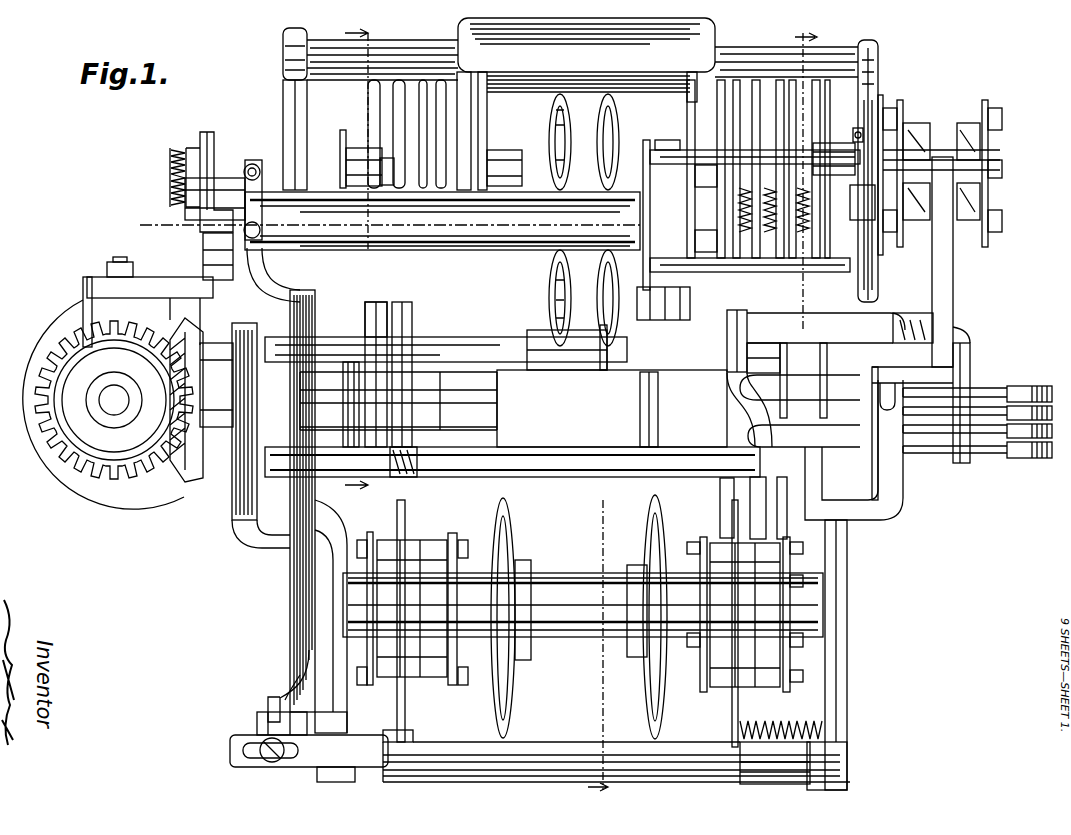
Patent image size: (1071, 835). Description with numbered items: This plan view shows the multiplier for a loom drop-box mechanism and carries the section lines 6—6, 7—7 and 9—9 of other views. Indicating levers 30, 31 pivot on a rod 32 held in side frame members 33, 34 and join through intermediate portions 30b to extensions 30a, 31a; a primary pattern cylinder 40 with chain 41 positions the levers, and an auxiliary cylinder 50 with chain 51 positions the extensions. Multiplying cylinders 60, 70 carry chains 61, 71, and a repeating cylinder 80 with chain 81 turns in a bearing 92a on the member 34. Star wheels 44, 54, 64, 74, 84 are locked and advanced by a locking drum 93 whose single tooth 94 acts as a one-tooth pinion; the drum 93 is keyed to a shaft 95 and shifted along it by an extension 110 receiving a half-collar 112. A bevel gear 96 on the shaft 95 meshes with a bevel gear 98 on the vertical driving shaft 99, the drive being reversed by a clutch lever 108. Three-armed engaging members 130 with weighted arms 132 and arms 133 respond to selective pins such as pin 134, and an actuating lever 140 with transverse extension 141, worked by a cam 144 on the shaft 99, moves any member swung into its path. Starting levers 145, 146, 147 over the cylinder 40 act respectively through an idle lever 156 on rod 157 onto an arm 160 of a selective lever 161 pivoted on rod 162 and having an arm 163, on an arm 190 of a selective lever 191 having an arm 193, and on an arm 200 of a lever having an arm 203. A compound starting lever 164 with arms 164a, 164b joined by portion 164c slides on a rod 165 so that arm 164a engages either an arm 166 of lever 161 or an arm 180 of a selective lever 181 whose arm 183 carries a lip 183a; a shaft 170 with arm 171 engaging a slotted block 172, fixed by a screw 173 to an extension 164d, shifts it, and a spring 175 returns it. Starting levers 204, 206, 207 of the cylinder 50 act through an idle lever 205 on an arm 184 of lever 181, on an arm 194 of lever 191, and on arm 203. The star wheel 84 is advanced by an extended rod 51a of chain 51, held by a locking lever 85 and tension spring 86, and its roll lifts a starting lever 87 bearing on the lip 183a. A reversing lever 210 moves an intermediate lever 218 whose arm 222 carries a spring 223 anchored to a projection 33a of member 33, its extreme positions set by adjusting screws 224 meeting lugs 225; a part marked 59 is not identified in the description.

The line 6— 6 is at (697, 416).
The line 7— 7 is at (356, 258).
The line 9— 9 is at (383, 220).
The indicating lever 30 is at (466, 122).
The extension 30a is at (717, 106).
The intermediate portion 30b is at (658, 55).
The indicating lever 31 is at (486, 122).
The extension 31a is at (687, 120).
The rod 32 is at (283, 52).
The side frame member 33 is at (283, 102).
The projection 33a is at (203, 226).
The side frame member 34 is at (883, 102).
The primary pattern cylinder 40 is at (346, 168).
The pattern chain 41 is at (340, 136).
The star wheel 44 is at (557, 324).
The auxiliary pattern cylinder 50 is at (678, 150).
The pattern chain 51 is at (823, 286).
The rod 51a is at (848, 215).
The star wheel 54 is at (616, 300).
The block 59 is at (665, 131).
The multiplying cylinder 60 is at (383, 670).
The pattern chain 61 is at (440, 670).
The star wheel 64 is at (492, 698).
The multiplying cylinder 70 is at (776, 675).
The pattern chain 71 is at (760, 680).
The star wheel 74 is at (643, 528).
The repeating cylinder 80 is at (970, 105).
The chain 81 is at (1002, 227).
The star wheel 84 is at (862, 135).
The locking lever 85 is at (830, 132).
The tension spring 86 is at (858, 130).
The starting lever 87 is at (947, 300).
The bearing 92a is at (900, 120).
The locking drum 93 is at (612, 408).
The actuating tooth 94 is at (642, 400).
The shaft 95 is at (347, 410).
The bevel gear 96 is at (190, 478).
The bevel gear 98 is at (80, 465).
The driving shaft 99 is at (118, 392).
The clutch lever 108 is at (87, 295).
The extension 110 is at (490, 408).
The half-collar 112 is at (490, 380).
The three-armed engaging member 130 is at (990, 452).
The weighted arm 132 is at (1028, 454).
The third arm 133 is at (918, 448).
The selective pin 134 is at (847, 616).
The actuating lever 140 is at (913, 324).
The transverse extension 141 is at (970, 356).
The cam 144 is at (97, 492).
The starting lever 145 is at (380, 38).
The starting lever 146 is at (425, 40).
The starting lever 147 is at (400, 40).
The idle lever 156 is at (378, 312).
The rod 157 is at (572, 352).
The arm 160 is at (380, 440).
The selective lever 161 is at (283, 477).
The rod 162 is at (403, 477).
The arm 163 is at (804, 395).
The compound starting lever 164 is at (570, 755).
The arm 164a is at (732, 700).
The arm 164b is at (397, 712).
The intermediate portion 164c is at (470, 752).
The extension 164d is at (238, 767).
The rod 165 is at (772, 770).
The arm 166 is at (720, 512).
The shaft 170 is at (290, 615).
The arm 171 is at (280, 690).
The slotted block 172 is at (257, 722).
The screw 173 is at (276, 762).
The spring 175 is at (800, 717).
The arm 180 is at (758, 500).
The selective lever 181 is at (783, 505).
The arm 183 is at (897, 455).
The lip 183a is at (888, 462).
The arm 184 is at (730, 418).
The arm 190 is at (446, 350).
The selective lever 191 is at (615, 350).
The arm 193 is at (800, 393).
The arm 194 is at (727, 316).
The arm 200 is at (398, 320).
The arm 203 is at (862, 338).
The starting lever 204 is at (786, 78).
The idle lever 205 is at (773, 364).
The starting lever 206 is at (738, 78).
The starting lever 207 is at (760, 78).
The reversing lever 210 is at (442, 221).
The intermediate lever 218 is at (232, 185).
The arm 222 is at (200, 136).
The spring 223 is at (170, 172).
The adjusting screws 224 is at (255, 166).
The lugs 225 is at (250, 163).